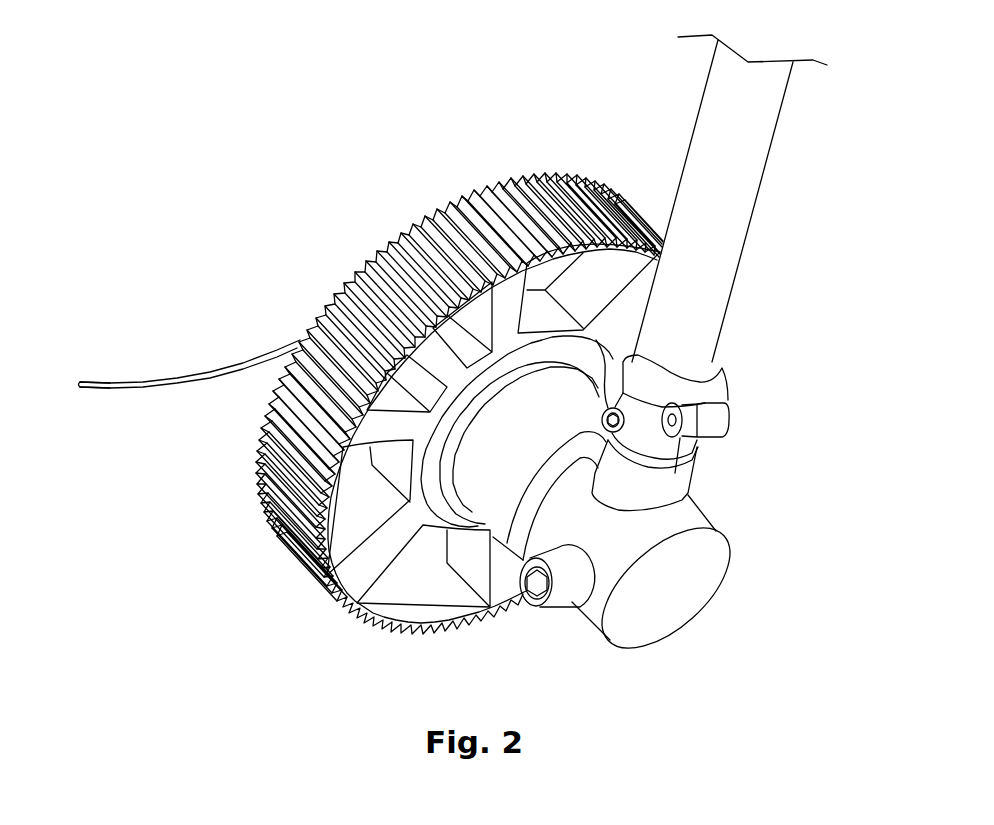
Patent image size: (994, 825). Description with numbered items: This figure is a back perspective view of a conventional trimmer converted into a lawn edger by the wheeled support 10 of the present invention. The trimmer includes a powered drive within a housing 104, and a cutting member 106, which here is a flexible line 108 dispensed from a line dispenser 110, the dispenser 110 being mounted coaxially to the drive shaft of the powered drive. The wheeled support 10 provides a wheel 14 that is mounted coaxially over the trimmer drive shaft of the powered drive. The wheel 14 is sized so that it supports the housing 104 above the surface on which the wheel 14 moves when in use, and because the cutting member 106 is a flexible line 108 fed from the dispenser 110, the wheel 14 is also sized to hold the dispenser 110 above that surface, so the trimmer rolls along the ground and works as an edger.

The wheeled support 10 is at (241, 611).
The wheel 14 is at (528, 177).
The housing 104 is at (697, 515).
The cutting member 106 is at (107, 390).
The flexible line 108 is at (170, 380).
The line dispenser 110 is at (337, 283).